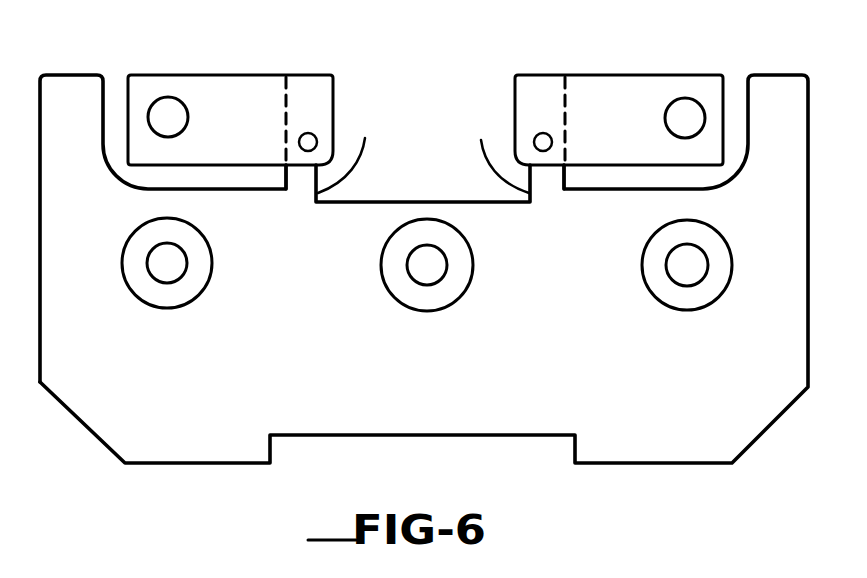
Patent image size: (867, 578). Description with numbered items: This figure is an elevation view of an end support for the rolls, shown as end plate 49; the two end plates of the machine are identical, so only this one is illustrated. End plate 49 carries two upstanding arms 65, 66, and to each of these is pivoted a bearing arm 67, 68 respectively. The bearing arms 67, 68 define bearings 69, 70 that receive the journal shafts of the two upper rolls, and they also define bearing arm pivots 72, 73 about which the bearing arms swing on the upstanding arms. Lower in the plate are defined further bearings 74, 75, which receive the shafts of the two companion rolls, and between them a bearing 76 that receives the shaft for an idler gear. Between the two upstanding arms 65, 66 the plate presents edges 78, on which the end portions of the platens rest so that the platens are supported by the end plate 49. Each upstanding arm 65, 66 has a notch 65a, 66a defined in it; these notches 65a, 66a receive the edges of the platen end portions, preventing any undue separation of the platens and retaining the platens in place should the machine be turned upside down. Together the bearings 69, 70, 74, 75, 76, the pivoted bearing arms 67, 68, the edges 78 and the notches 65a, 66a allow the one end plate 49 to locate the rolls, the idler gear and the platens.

The end plate 49 is at (550, 348).
The upstanding arm 65 is at (285, 173).
The notch 65a is at (360, 150).
The upstanding arm 66 is at (563, 173).
The notch 66a is at (490, 150).
The bearing arm 67 is at (233, 88).
The bearing arm 68 is at (627, 87).
The bearing 69 is at (170, 99).
The bearing 70 is at (693, 110).
The bearing arm pivot 72 is at (308, 133).
The bearing arm pivot 73 is at (543, 133).
The bearing 74 is at (163, 273).
The bearing 75 is at (688, 273).
The bearing 76 is at (418, 275).
The edge 78 is at (422, 202).